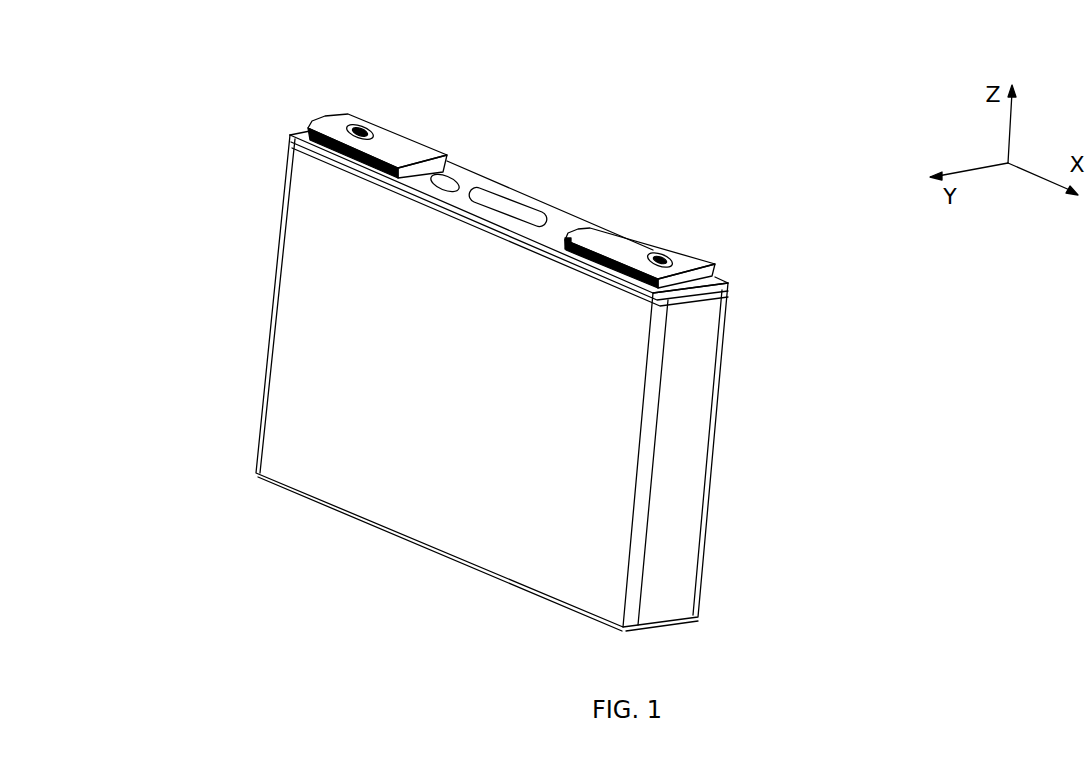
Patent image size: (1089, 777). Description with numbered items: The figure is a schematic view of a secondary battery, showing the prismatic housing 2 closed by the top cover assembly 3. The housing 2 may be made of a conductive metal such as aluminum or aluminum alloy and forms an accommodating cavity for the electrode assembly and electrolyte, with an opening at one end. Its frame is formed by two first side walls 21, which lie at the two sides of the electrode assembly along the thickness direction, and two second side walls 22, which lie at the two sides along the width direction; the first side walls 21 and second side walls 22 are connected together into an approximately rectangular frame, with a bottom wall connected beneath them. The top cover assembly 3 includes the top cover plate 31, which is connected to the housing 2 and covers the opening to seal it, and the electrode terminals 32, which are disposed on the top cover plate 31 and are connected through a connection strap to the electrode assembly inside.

The housing 2 is at (466, 383).
The first side wall 21 is at (400, 495).
The second side wall 22 is at (692, 457).
The top cover assembly 3 is at (509, 167).
The top cover plate 31 is at (495, 187).
The electrode terminal 32 is at (400, 144).